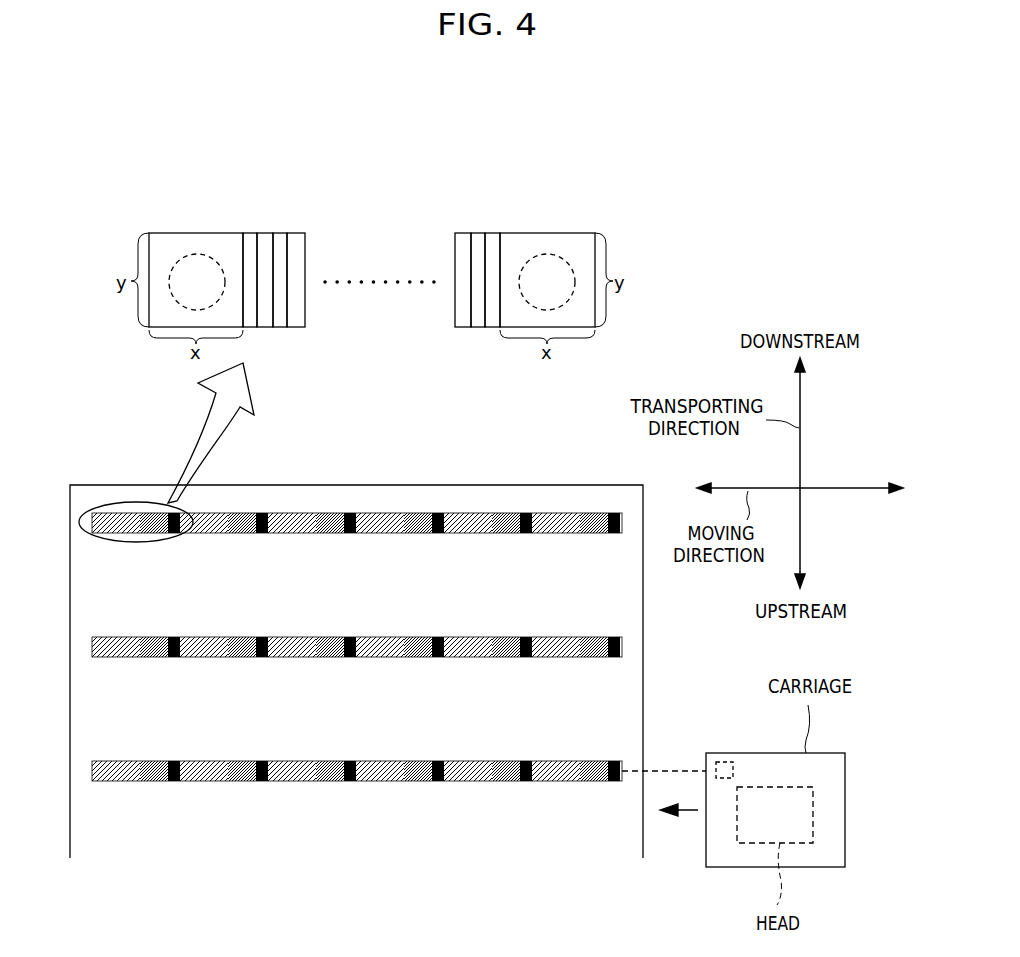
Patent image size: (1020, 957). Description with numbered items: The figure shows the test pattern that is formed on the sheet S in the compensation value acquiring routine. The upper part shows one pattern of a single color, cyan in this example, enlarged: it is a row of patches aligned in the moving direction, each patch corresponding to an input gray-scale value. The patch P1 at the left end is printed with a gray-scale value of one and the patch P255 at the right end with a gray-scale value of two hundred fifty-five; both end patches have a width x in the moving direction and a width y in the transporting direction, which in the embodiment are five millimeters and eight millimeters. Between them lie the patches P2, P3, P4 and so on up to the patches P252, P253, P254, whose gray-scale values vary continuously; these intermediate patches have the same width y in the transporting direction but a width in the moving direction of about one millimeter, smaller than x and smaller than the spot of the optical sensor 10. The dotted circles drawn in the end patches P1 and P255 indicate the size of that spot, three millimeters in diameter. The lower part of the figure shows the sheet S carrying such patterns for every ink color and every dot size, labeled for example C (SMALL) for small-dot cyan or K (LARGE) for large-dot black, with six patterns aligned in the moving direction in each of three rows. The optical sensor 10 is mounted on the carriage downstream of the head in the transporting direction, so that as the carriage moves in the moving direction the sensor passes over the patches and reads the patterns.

The patch P1 is at (170, 233).
The patch P2 is at (246, 233).
The patch P3 is at (264, 233).
The patch P4 is at (283, 233).
The patch P252 is at (459, 233).
The patch P253 is at (476, 233).
The patch P254 is at (493, 233).
The patch P255 is at (566, 233).
The sheet S is at (569, 485).
The optical sensor 10 is at (718, 762).